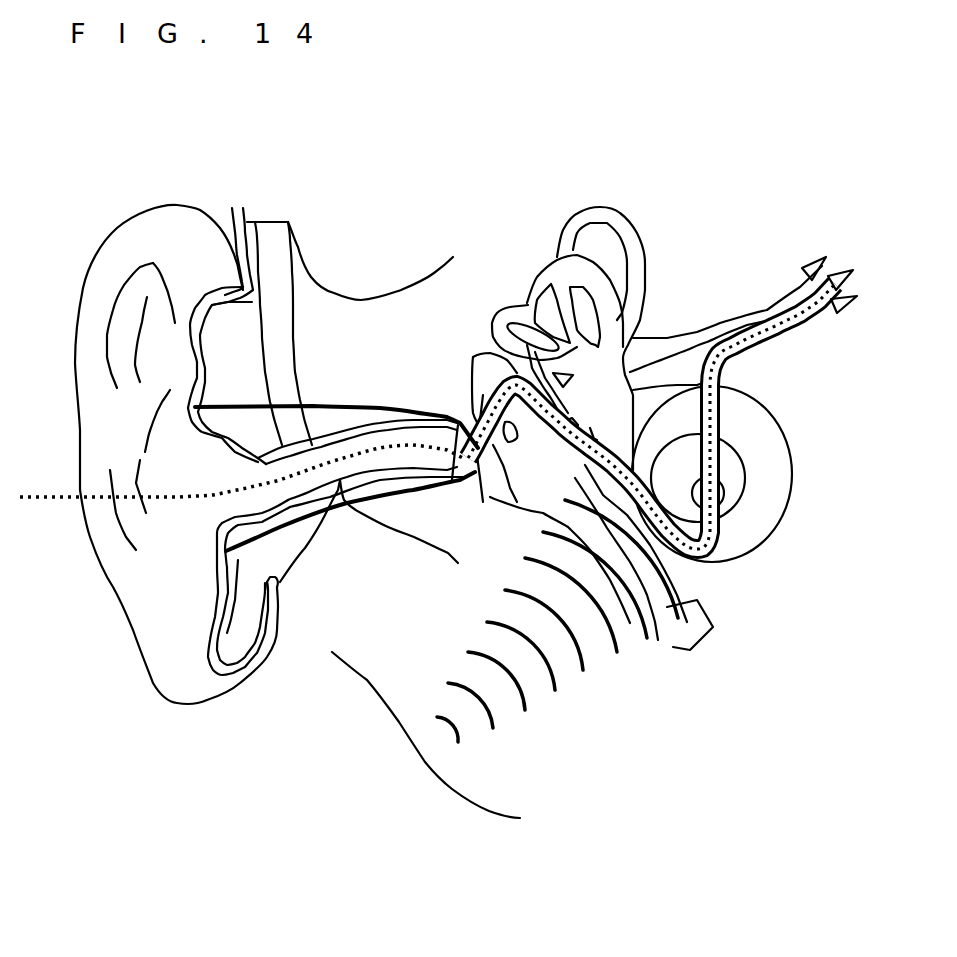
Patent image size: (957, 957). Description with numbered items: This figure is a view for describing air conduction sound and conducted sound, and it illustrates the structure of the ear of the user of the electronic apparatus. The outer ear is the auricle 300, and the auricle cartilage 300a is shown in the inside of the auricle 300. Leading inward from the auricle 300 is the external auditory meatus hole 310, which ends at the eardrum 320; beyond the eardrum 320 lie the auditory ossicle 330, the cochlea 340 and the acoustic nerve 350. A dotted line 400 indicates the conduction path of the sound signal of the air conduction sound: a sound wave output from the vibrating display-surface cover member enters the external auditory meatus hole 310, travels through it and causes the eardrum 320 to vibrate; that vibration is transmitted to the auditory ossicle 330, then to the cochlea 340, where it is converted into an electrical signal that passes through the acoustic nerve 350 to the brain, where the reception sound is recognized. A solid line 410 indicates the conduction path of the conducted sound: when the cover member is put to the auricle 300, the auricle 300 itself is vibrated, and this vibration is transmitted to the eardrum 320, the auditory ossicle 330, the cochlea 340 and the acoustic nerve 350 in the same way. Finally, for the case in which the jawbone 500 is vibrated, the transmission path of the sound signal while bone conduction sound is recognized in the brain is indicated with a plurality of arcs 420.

The auricle 300 is at (173, 237).
The auricle cartilage 300a is at (228, 348).
The external auditory meatus hole 310 is at (378, 447).
The eardrum 320 is at (473, 490).
The auditory ossicle 330 is at (520, 387).
The cochlea 340 is at (757, 530).
The acoustic nerve 350 is at (700, 330).
The dotted line 400 is at (43, 503).
The solid line 410 is at (217, 407).
The arcs 420 is at (697, 602).
The jawbone 500 is at (457, 793).